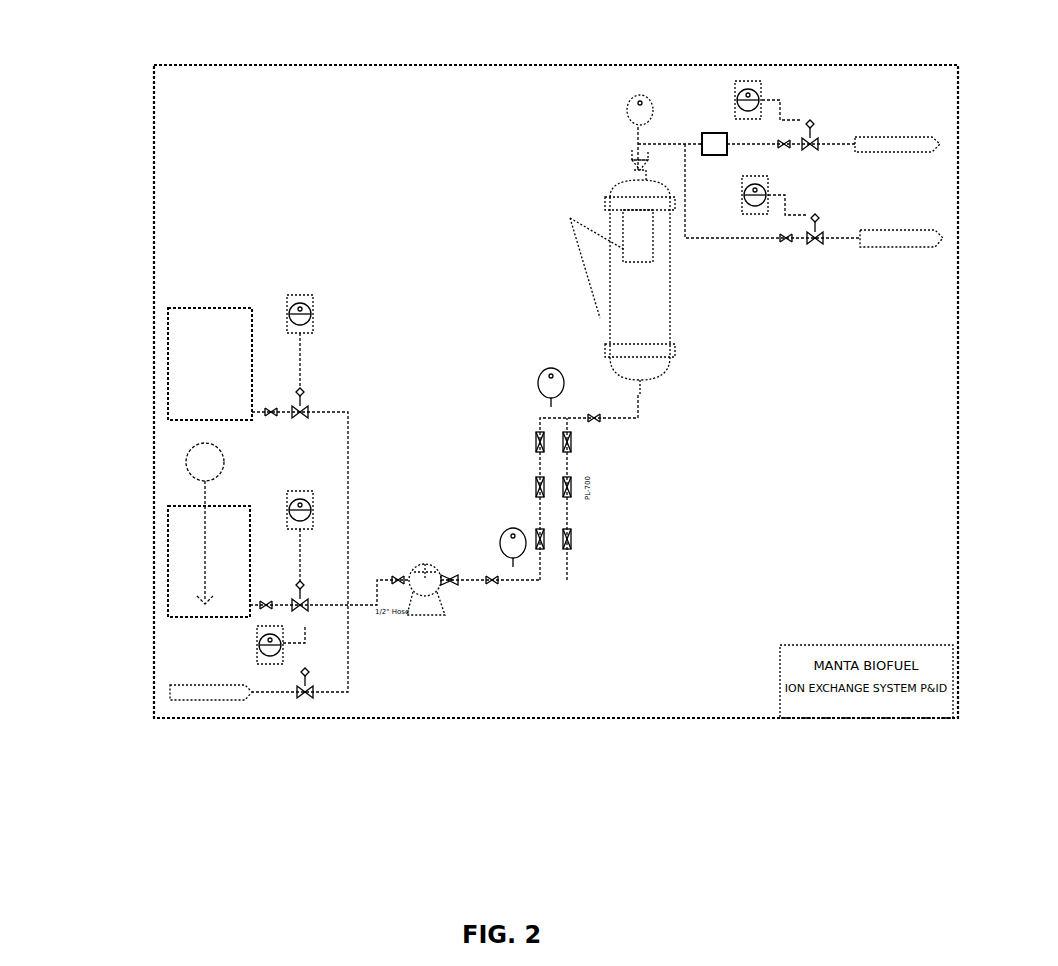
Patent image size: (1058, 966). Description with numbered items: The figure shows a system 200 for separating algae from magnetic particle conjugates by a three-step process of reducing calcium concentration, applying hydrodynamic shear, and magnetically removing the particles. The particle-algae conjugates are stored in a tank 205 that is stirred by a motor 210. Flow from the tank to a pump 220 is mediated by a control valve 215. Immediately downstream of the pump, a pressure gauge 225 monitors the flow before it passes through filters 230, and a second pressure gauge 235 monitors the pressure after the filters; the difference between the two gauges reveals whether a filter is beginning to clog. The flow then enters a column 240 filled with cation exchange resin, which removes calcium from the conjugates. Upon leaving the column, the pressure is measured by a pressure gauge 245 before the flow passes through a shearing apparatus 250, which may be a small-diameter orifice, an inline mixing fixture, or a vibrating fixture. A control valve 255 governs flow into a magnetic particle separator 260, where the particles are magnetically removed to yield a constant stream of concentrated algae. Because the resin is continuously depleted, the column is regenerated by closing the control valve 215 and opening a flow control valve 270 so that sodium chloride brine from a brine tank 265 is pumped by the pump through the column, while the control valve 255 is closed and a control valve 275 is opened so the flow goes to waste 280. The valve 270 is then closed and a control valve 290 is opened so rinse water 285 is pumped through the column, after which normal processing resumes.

The ion exchange system 200 is at (792, 908).
The tank 205 is at (166, 513).
The motor 210 is at (186, 461).
The control valve 215 is at (296, 605).
The pump 220 is at (431, 630).
The pressure gauge 225 is at (515, 598).
The filters 230 is at (584, 532).
The pressure gauge 235 is at (541, 369).
The column 240 is at (604, 300).
The pressure gauge 245 is at (615, 113).
The shearing apparatus 250 is at (712, 120).
The control valve 255 is at (810, 108).
The magnetic particle separator 260 is at (888, 118).
The brine tank 265 is at (213, 298).
The flow control valve 270 is at (306, 406).
The control valve 275 is at (820, 262).
The waste 280 is at (893, 262).
The rinse water 285 is at (205, 712).
The control valve 290 is at (305, 712).